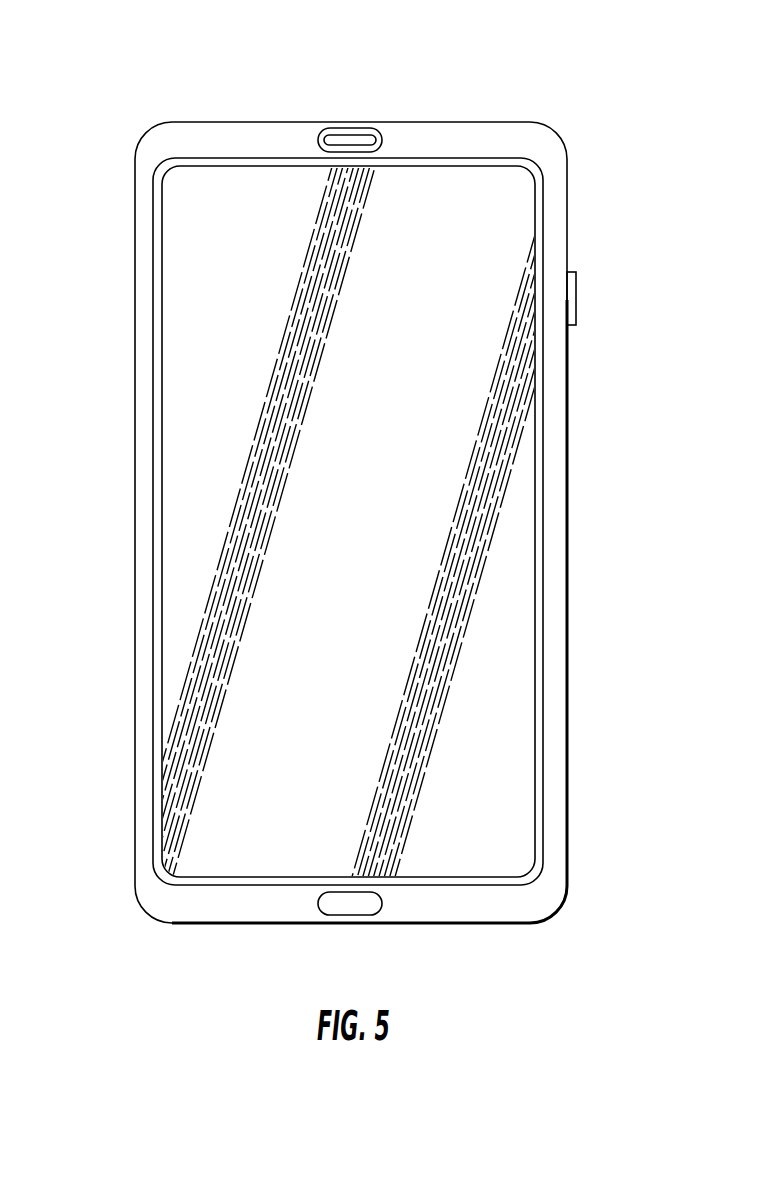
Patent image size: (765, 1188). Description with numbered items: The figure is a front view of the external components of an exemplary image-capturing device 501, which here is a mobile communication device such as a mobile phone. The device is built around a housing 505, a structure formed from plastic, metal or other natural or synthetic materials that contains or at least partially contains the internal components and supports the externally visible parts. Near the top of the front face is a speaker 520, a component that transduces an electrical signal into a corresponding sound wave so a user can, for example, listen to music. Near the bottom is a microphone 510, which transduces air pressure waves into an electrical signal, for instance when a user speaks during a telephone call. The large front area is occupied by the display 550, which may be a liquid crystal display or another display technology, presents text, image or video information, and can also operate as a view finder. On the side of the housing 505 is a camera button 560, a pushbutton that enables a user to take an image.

The image-capturing device 501 is at (181, 73).
The housing 505 is at (135, 472).
The microphone 510 is at (357, 907).
The speaker 520 is at (347, 132).
The display 550 is at (525, 478).
The camera button 560 is at (572, 302).